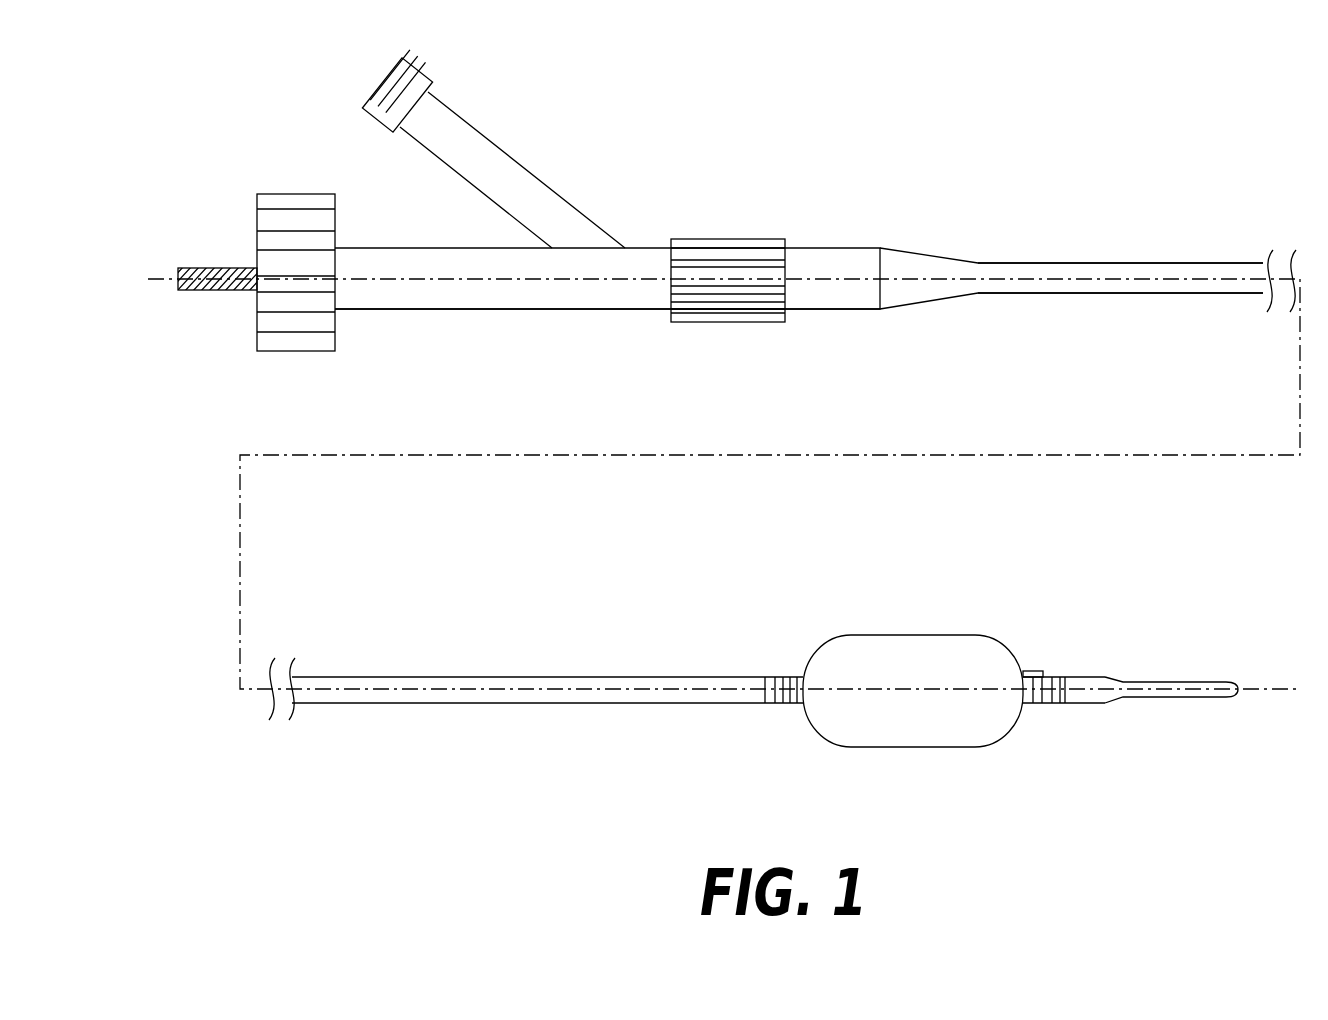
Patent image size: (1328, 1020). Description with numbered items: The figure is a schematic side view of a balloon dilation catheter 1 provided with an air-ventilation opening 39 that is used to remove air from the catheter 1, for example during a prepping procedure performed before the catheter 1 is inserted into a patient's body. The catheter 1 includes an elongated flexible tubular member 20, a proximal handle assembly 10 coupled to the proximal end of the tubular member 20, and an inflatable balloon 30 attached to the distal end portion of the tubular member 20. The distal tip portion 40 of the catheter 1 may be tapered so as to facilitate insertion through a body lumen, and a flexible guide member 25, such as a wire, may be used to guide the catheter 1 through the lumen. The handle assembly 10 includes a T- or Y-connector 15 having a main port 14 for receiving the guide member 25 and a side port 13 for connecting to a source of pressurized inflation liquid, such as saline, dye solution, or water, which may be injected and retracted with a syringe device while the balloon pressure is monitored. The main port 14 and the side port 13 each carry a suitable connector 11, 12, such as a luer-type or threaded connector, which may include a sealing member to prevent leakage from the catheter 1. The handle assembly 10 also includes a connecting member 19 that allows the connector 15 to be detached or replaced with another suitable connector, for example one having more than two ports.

The balloon dilation catheter 1 is at (1057, 130).
The proximal handle assembly 10 is at (600, 148).
The connector 11 is at (283, 203).
The connector 12 is at (412, 72).
The side port 13 is at (495, 157).
The main port 14 is at (373, 296).
The T- or Y-connector 15 is at (498, 292).
The connecting member 19 is at (725, 245).
The elongated flexible tubular member 20 is at (1092, 265).
The flexible guide member 25 is at (187, 268).
The inflatable balloon 30 is at (962, 590).
The air-ventilation opening 39 is at (1030, 670).
The distal tip portion 40 is at (1172, 682).